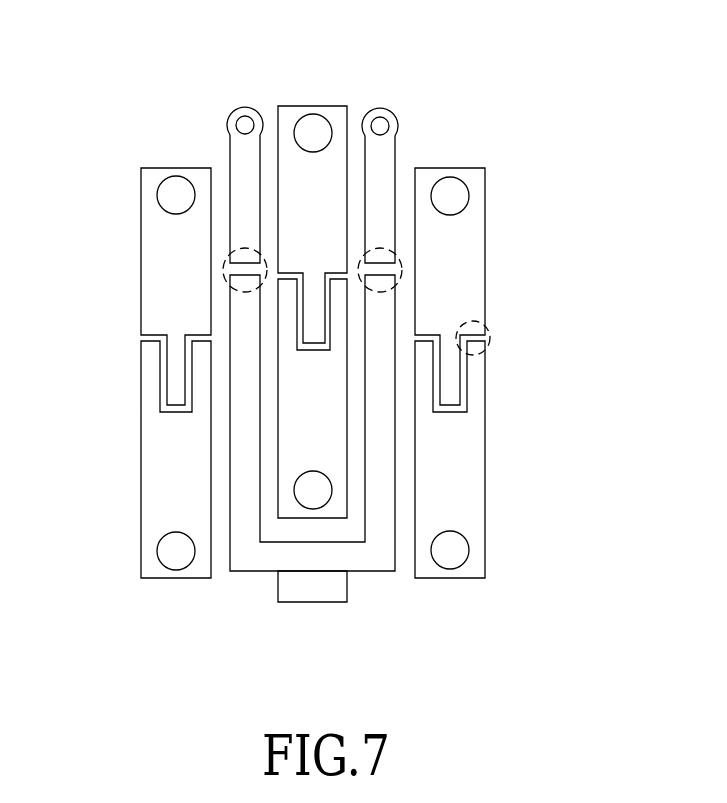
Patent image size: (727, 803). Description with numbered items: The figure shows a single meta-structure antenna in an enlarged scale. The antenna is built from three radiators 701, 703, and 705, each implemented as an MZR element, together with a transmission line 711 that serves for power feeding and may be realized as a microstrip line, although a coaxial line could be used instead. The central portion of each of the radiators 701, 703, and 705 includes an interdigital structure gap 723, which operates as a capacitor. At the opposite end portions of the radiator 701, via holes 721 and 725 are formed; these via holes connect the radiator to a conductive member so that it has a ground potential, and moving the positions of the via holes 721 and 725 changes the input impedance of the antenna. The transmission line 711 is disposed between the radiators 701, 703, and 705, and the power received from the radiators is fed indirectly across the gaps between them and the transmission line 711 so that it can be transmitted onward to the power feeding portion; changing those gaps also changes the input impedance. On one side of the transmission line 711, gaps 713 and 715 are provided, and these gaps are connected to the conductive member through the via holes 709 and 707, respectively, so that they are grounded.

The radiator 701 is at (463, 255).
The radiator 703 is at (313, 115).
The radiator 705 is at (176, 168).
The via hole 707 is at (380, 118).
The via hole 709 is at (245, 118).
The transmission line 711 is at (262, 560).
The gap 713 is at (222, 270).
The gap 715 is at (402, 270).
The via hole 721 is at (453, 196).
The interdigital structure gap 723 is at (492, 337).
The via hole 725 is at (453, 553).